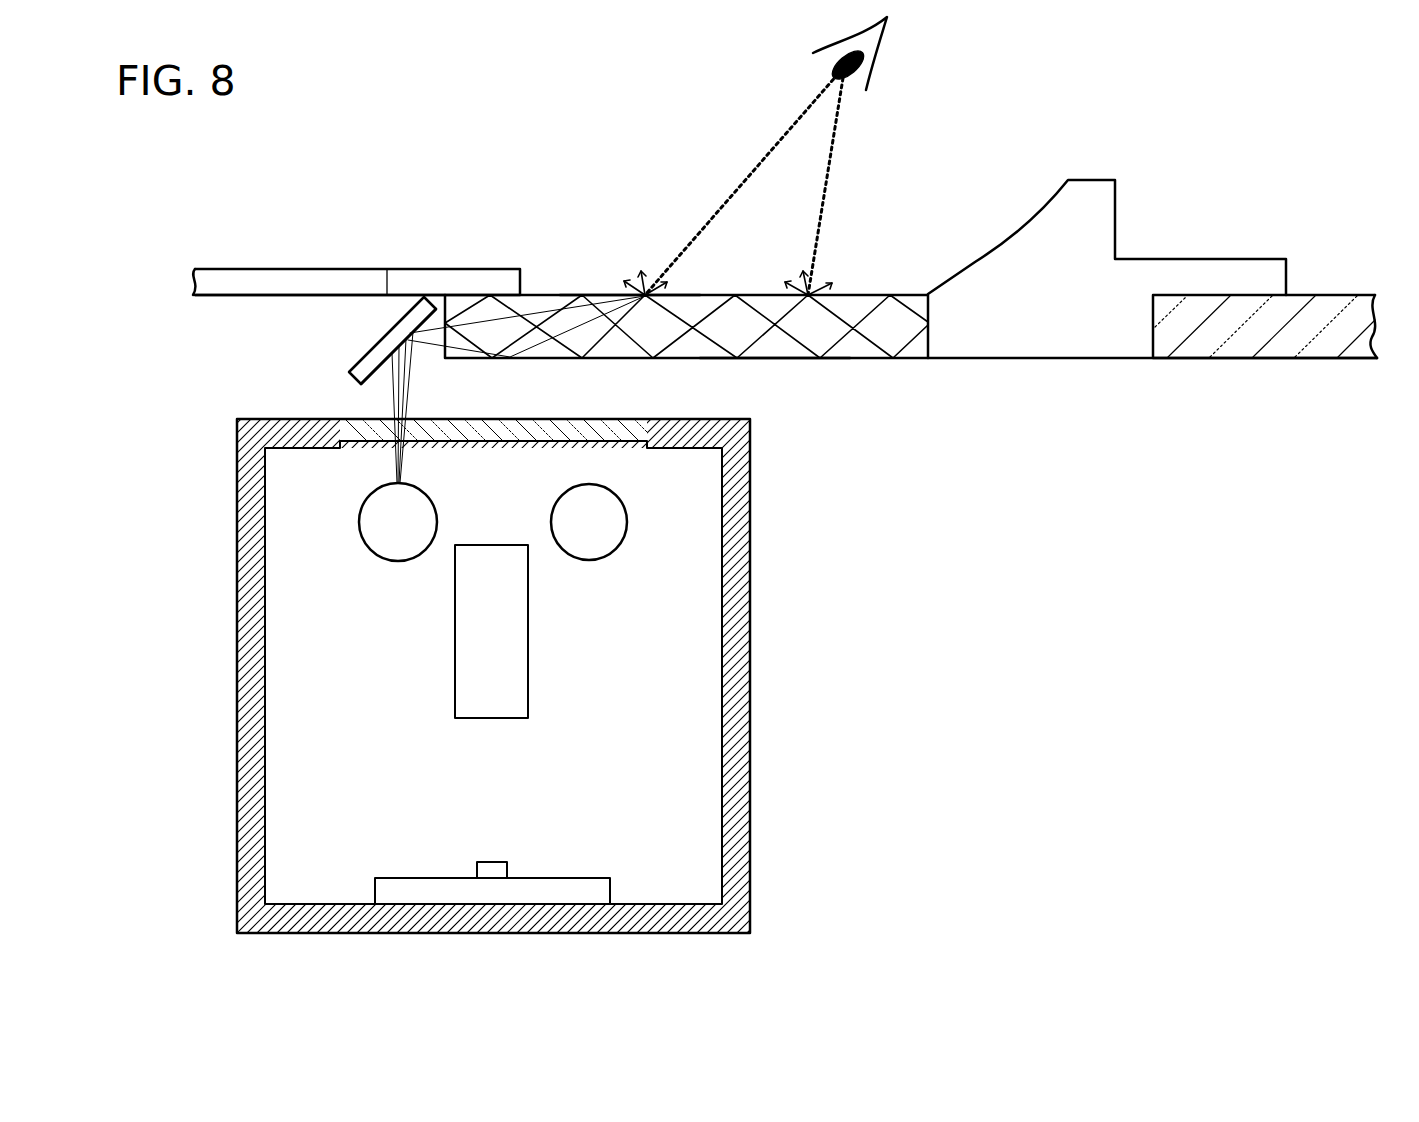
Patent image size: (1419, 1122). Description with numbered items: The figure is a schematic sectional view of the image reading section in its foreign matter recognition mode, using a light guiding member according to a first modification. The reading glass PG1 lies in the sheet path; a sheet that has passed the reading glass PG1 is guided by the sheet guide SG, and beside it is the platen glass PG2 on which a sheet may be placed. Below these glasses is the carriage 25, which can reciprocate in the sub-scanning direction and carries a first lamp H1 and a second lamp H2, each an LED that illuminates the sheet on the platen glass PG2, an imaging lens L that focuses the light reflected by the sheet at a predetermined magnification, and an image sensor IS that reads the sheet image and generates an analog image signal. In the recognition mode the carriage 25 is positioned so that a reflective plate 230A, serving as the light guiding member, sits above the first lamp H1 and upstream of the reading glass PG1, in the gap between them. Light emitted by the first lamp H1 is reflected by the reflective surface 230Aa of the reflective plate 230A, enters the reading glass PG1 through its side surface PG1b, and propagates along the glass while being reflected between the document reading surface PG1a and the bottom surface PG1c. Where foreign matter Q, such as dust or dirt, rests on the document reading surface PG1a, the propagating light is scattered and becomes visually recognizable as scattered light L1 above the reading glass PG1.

The reading glass PG1 is at (548, 297).
The document reading surface PG1a is at (610, 297).
The side surface PG1b is at (387, 270).
The bottom surface PG1c is at (765, 358).
The platen glass PG2 is at (1283, 313).
The sheet guide SG is at (1092, 210).
The foreign matter Q is at (800, 290).
The scattered light L1 is at (766, 156).
The reflective plate 230A is at (384, 340).
The reflective surface 230Aa is at (378, 367).
The carriage 25 is at (760, 561).
The first lamp H1 is at (392, 535).
The second lamp H2 is at (595, 532).
The imaging lens L is at (480, 623).
The image sensor IS is at (497, 873).